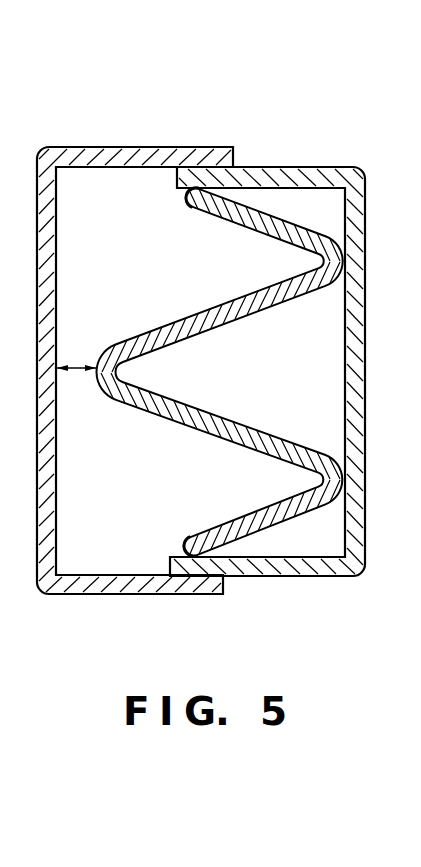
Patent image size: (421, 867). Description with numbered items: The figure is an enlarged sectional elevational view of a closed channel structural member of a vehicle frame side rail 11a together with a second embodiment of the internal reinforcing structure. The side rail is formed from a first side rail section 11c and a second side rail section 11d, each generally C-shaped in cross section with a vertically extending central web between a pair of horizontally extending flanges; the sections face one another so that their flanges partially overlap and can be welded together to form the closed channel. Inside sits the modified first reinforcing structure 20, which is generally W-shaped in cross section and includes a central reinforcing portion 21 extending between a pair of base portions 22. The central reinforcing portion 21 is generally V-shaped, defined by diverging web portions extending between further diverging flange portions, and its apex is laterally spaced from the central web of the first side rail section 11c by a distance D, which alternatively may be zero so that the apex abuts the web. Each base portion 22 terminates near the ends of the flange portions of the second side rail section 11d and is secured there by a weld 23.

The case 11a is at (201, 351).
The first side rail section 11c is at (205, 147).
The second side rail section 11d is at (278, 570).
The first reinforcing structure 20 is at (182, 306).
The central reinforcing portion 21 is at (227, 312).
The base portions 22 is at (248, 225).
The weld 23 is at (190, 193).
The distance D is at (76, 366).